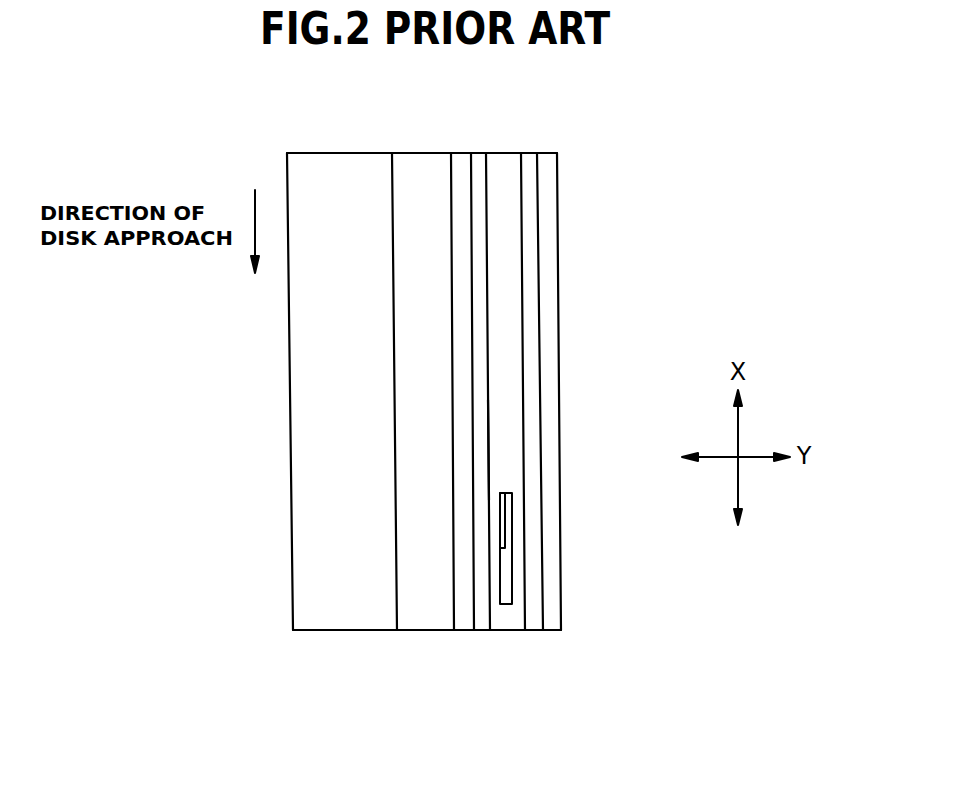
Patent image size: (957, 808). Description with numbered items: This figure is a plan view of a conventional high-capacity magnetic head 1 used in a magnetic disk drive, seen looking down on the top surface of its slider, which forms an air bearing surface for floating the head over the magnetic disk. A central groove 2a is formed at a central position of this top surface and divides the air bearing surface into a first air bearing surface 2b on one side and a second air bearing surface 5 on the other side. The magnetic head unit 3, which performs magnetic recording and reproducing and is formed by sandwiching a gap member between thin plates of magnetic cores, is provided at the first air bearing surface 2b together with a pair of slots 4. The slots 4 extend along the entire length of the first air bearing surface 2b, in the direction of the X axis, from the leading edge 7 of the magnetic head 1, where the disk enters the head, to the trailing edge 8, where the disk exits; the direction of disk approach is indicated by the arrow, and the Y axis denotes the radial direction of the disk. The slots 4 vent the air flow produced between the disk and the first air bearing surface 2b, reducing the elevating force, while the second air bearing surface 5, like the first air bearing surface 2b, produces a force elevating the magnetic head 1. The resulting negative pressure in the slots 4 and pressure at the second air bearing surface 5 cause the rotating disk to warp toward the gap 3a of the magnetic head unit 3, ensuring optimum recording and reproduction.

The magnetic head 1 is at (637, 200).
The central groove 2a is at (422, 595).
The first air bearing surface 2b is at (510, 423).
The magnetic head unit 3 is at (515, 562).
The gap 3a is at (503, 547).
The slots 4 is at (483, 618).
The second air bearing surface 5 is at (300, 537).
The leading edge 7 is at (413, 152).
The trailing edge 8 is at (510, 631).